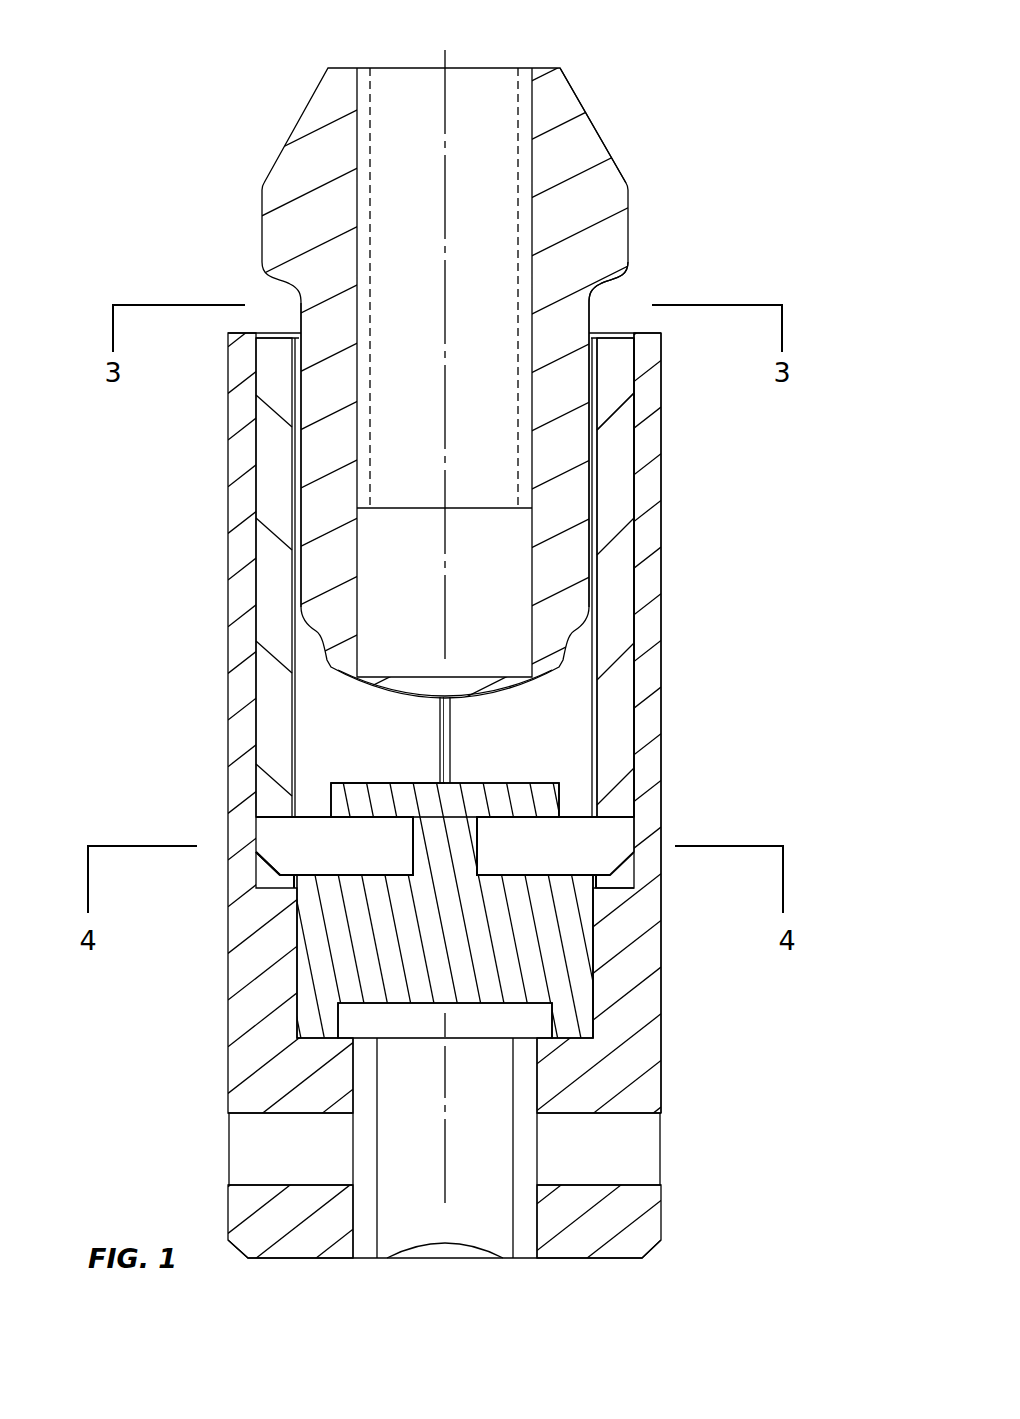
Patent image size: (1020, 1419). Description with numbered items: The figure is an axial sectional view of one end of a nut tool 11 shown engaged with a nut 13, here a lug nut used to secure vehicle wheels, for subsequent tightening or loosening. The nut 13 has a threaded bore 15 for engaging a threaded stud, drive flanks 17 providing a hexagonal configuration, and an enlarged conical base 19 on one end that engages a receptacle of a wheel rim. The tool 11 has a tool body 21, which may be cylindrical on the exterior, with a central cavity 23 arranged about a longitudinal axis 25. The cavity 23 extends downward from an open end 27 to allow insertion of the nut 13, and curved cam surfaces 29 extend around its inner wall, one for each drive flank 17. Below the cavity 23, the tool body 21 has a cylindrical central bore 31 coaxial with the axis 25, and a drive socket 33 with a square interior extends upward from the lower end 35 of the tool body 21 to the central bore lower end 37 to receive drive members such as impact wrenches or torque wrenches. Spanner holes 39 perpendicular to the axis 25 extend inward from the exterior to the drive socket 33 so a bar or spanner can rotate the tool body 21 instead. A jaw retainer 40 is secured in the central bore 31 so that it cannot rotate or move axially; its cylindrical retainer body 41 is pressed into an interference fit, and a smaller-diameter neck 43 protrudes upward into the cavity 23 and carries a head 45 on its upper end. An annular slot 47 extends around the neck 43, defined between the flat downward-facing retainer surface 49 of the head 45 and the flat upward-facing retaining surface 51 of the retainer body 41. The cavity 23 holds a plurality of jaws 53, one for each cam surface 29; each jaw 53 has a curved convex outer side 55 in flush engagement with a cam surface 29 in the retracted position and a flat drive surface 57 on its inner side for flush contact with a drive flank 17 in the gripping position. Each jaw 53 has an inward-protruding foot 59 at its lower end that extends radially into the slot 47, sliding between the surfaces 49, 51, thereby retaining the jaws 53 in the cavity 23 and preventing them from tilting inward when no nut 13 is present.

The tool 11 is at (690, 598).
The nut 13 is at (637, 218).
The threaded bore 15 is at (518, 176).
The drive flanks 17 is at (590, 311).
The conical base 19 is at (603, 143).
The tool body 21 is at (662, 650).
The central cavity 23 is at (513, 750).
The longitudinal axis 25 is at (443, 378).
The open end 27 is at (652, 333).
The cam surfaces 29 is at (632, 706).
The central bore 31 is at (594, 952).
The drive socket 33 is at (483, 1083).
The lower end 35 is at (603, 1258).
The central bore lower end 37 is at (543, 1028).
The spanner holes 39 is at (630, 1183).
The jaw retainer 40 is at (596, 893).
The retainer body 41 is at (318, 940).
The neck 43 is at (433, 858).
The head 45 is at (353, 793).
The annular slot 47 is at (527, 820).
The retainer surface 49 is at (356, 815).
The retaining surface 51 is at (556, 872).
The jaws 53 is at (618, 393).
The outer side 55 is at (635, 427).
The drive surface 57 is at (607, 543).
The foot 59 is at (353, 873).